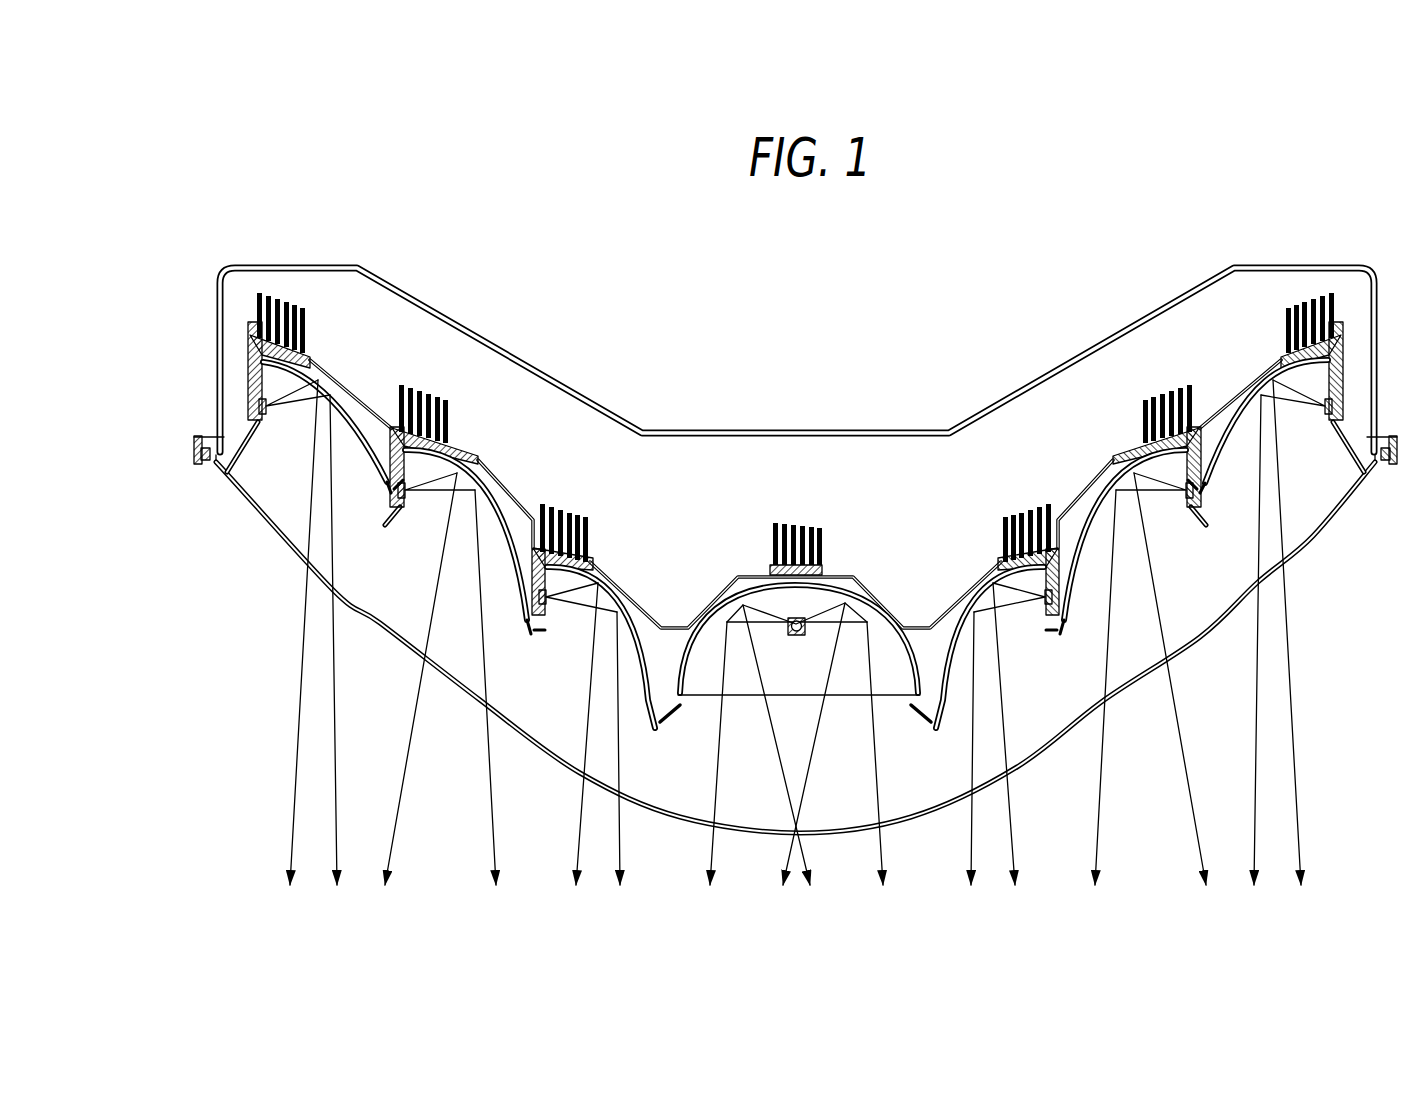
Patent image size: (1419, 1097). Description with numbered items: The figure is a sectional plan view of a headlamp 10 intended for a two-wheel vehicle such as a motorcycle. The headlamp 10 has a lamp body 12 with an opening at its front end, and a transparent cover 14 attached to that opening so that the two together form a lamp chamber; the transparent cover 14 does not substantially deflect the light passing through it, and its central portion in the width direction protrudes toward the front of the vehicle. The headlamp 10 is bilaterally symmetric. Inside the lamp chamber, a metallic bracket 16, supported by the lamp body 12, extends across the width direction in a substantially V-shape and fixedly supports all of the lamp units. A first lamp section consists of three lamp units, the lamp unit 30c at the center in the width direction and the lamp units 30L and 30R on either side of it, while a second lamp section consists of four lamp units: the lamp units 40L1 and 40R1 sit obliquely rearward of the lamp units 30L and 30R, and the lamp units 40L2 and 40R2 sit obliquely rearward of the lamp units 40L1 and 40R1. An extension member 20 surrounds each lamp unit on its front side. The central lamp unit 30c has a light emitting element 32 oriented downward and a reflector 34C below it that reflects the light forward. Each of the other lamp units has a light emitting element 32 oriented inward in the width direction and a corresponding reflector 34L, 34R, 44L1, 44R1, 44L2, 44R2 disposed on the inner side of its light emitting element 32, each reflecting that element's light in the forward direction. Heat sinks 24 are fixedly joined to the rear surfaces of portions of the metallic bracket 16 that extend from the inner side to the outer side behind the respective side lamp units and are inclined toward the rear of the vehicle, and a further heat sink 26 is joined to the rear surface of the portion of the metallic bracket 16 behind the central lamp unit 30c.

The headlamp 10 is at (888, 352).
The lamp body 12 is at (700, 425).
The transparent cover 14 is at (670, 825).
The metallic bracket 16 is at (730, 573).
The extension member 20 is at (928, 733).
The heat sinks 24 is at (447, 403).
The heat sink 26 is at (817, 523).
The lamp unit 30R is at (570, 693).
The lamp unit 30L is at (1020, 690).
The lamp unit 30c is at (768, 765).
The light emitting element 32 is at (263, 420).
The reflector 34R is at (633, 637).
The reflector 34L is at (958, 637).
The reflector 34C is at (845, 575).
The reflector 44R1 is at (503, 510).
The reflector 44R2 is at (357, 418).
The reflector 44L1 is at (1090, 513).
The reflector 44L2 is at (1237, 413).
The lamp unit 40R1 is at (425, 580).
The lamp unit 40R2 is at (295, 487).
The lamp unit 40L1 is at (1168, 583).
The lamp unit 40L2 is at (1297, 480).